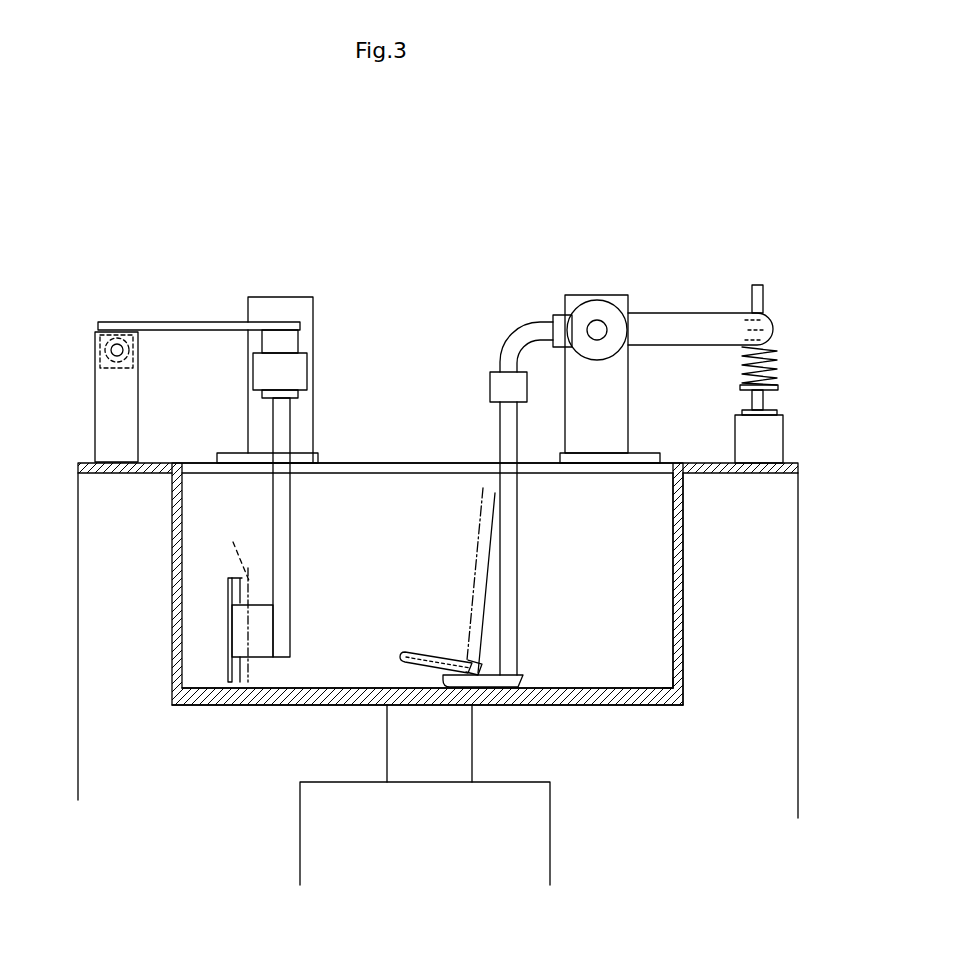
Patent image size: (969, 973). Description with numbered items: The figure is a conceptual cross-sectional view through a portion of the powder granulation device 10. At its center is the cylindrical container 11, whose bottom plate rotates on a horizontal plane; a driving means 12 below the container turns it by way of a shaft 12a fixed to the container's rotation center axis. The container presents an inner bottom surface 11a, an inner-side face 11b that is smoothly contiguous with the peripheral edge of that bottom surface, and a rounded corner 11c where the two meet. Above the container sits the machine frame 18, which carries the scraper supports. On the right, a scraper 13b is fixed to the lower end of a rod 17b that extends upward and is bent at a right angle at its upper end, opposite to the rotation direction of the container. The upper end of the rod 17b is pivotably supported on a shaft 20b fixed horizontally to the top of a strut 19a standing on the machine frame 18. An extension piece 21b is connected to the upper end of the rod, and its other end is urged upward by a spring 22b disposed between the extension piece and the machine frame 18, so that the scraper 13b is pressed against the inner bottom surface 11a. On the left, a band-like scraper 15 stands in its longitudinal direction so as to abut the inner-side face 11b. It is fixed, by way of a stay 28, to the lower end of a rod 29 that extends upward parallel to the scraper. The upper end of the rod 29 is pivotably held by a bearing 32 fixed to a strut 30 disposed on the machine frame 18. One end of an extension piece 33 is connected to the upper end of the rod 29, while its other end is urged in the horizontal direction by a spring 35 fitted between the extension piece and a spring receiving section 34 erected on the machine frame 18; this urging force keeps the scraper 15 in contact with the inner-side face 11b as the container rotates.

The powder granulation device 10 is at (432, 382).
The cylindrical container 11 is at (173, 597).
The inner bottom surface 11a is at (632, 680).
The inner-side face 11b is at (655, 603).
The corner 11c is at (670, 678).
The driving means 12 is at (322, 828).
The shaft 12a is at (457, 753).
The scraper 13b is at (473, 668).
The scraper 15 is at (227, 577).
The rod 17b is at (517, 580).
The machine frame 18 is at (767, 472).
The strut 19a is at (602, 415).
The shaft 20b is at (597, 330).
The extension piece 21b is at (690, 337).
The spring 22b is at (773, 370).
The stay 28 is at (262, 647).
The rod 29 is at (283, 583).
The strut 30 is at (300, 457).
The bearing 32 is at (283, 372).
The extension piece 33 is at (193, 327).
The spring receiving section 34 is at (110, 407).
The spring 35 is at (97, 352).